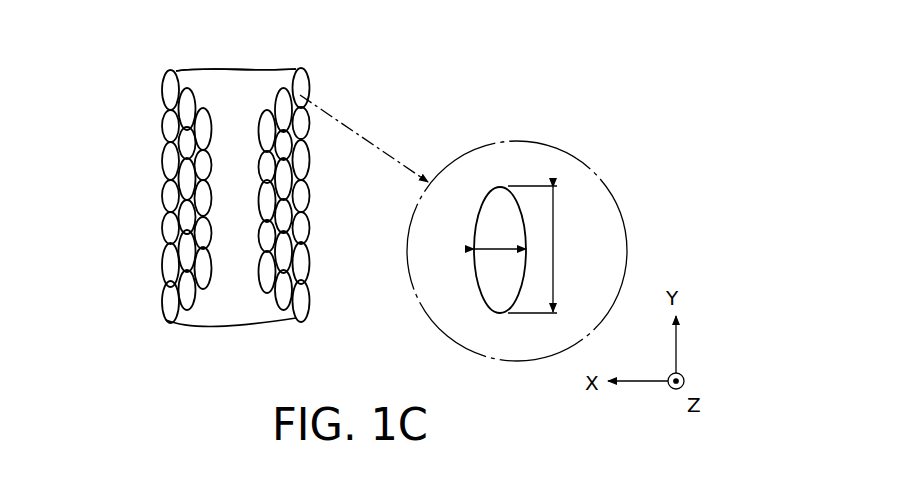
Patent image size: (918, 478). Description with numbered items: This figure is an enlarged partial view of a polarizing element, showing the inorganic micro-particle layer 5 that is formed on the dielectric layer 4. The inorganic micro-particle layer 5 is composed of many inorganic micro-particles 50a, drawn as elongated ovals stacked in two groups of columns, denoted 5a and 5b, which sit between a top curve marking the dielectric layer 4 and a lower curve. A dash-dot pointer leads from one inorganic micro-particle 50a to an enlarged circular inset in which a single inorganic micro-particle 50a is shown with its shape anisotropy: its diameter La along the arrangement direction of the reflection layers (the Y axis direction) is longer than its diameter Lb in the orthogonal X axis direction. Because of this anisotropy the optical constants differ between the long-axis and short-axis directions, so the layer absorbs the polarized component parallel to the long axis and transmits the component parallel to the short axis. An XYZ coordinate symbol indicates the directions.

The dielectric layer 4 is at (234, 80).
The inorganic micro-particle layer 5 is at (273, 66).
The right light emitting element row 5a is at (266, 303).
The left light emitting element row 5b is at (202, 303).
The inorganic micro-particle 50a is at (162, 90).